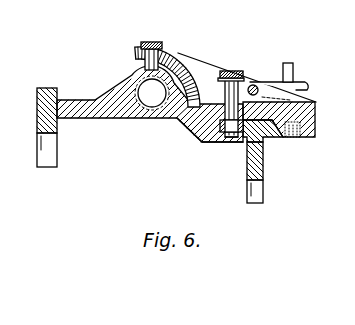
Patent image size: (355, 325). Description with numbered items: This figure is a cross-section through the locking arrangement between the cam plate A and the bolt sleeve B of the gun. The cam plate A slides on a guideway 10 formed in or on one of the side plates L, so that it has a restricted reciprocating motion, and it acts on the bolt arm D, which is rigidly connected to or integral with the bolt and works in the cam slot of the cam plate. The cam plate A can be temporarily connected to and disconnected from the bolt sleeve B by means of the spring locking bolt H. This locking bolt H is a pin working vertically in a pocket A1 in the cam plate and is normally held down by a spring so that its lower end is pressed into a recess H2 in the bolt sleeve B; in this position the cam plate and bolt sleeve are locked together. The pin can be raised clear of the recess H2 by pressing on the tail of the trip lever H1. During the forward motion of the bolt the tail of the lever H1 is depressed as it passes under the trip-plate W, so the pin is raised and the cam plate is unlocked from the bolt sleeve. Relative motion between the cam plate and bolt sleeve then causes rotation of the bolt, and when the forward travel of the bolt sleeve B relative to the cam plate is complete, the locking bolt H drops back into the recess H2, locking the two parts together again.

The side plates L is at (37, 100).
The bolt sleeve B is at (107, 96).
The bolt arm D is at (150, 63).
The cam plate A is at (181, 52).
The pocket A1 is at (193, 138).
The locking bolt H is at (231, 71).
The trip lever H1 is at (305, 80).
The recess H2 is at (232, 140).
The trip-plate W is at (285, 65).
The guideway 10 is at (278, 140).